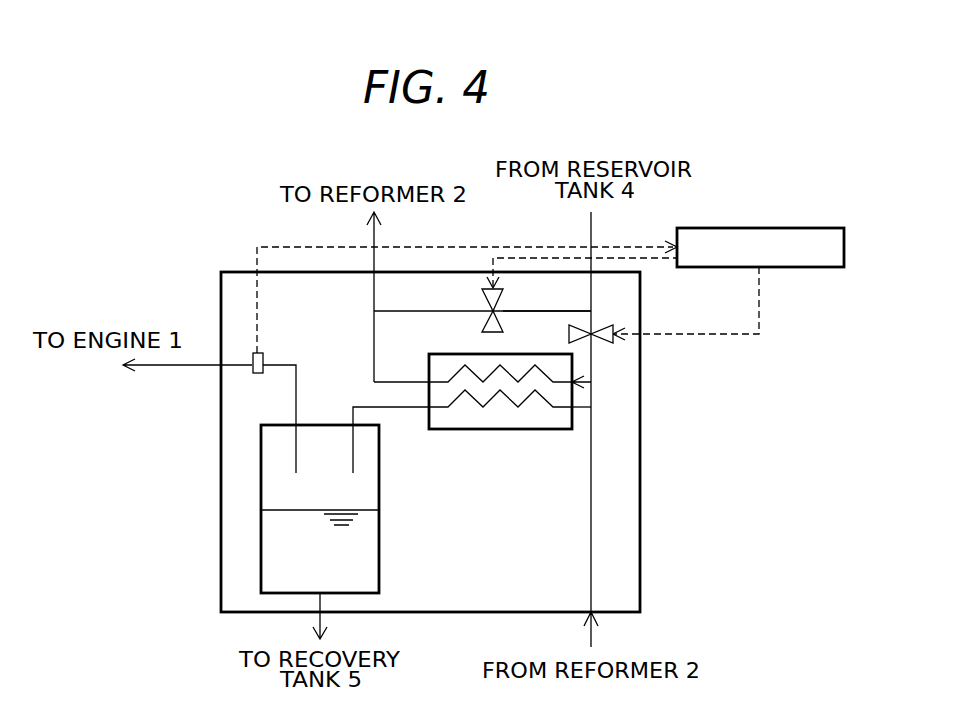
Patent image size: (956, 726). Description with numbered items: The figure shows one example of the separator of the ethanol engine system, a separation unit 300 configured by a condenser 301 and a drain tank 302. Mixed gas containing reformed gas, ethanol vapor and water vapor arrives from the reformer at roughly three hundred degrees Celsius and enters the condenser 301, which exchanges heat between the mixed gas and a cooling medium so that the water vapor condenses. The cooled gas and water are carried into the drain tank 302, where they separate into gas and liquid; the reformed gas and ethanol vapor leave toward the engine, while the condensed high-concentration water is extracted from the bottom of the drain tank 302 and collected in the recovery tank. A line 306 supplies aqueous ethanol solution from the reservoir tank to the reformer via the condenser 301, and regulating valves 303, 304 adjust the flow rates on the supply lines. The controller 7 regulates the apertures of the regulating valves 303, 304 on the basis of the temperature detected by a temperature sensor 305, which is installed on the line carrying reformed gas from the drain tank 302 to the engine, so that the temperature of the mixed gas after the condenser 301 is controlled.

The controller 7 is at (787, 228).
The separation unit 300 is at (640, 490).
The condenser 301 is at (503, 430).
The drain tank 302 is at (379, 510).
The regulating valve 303 is at (603, 344).
The regulating valve 304 is at (482, 302).
The temperature sensor 305 is at (263, 358).
The line 306 is at (512, 307).